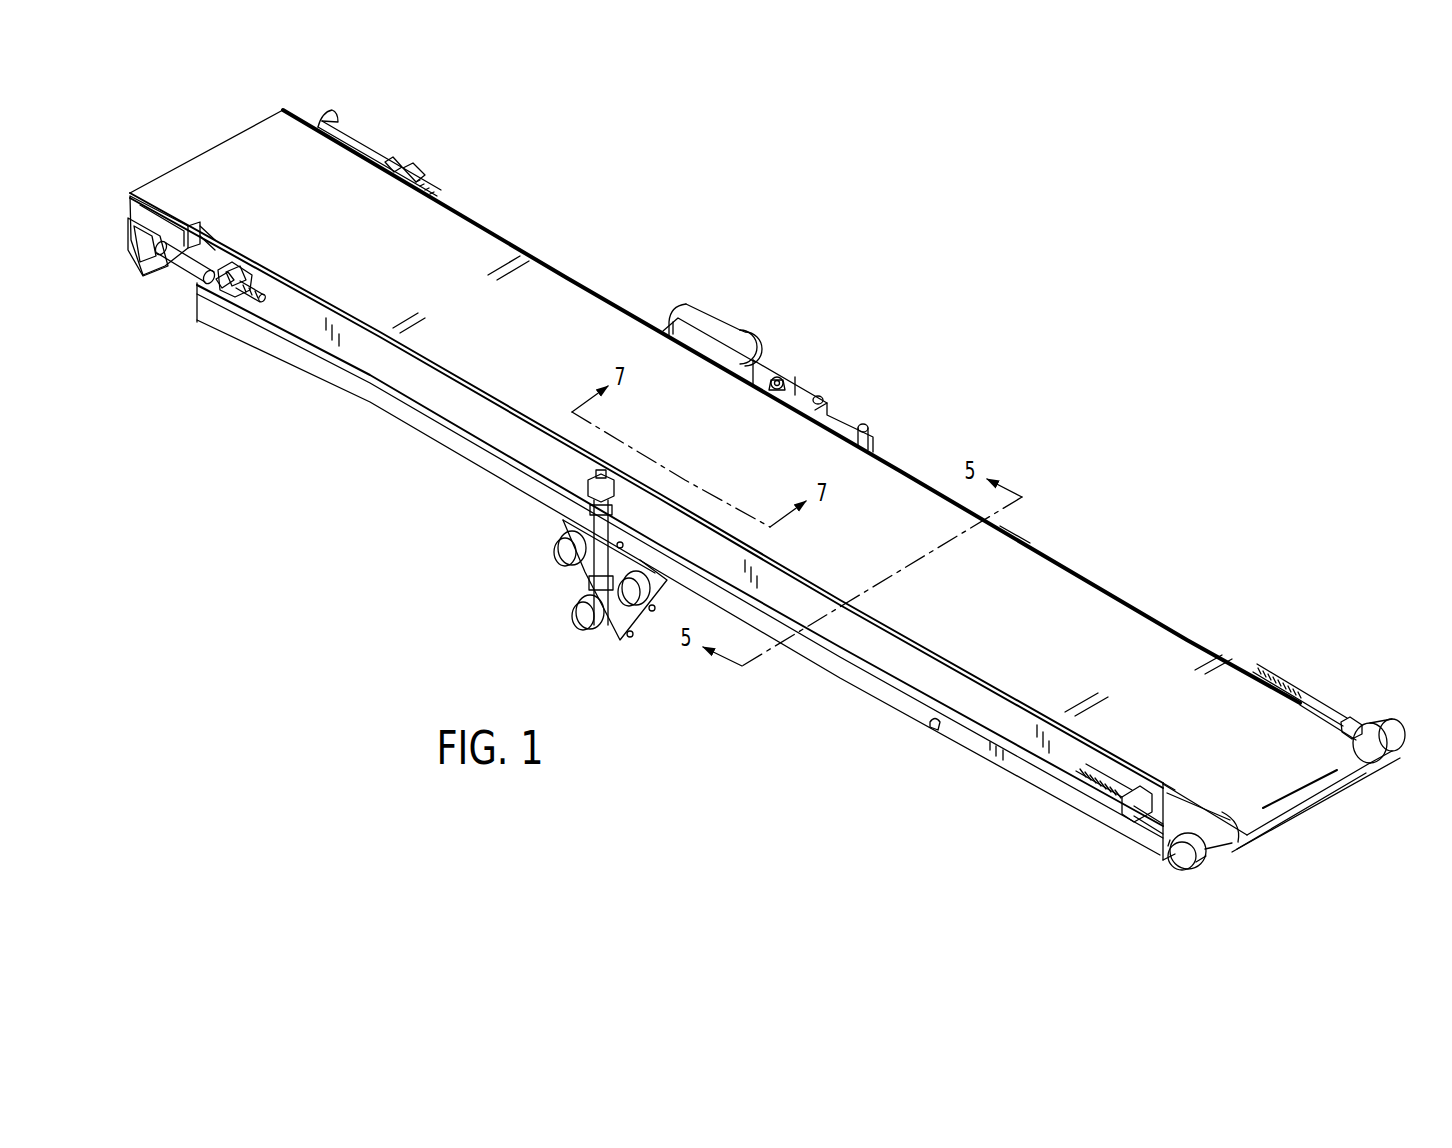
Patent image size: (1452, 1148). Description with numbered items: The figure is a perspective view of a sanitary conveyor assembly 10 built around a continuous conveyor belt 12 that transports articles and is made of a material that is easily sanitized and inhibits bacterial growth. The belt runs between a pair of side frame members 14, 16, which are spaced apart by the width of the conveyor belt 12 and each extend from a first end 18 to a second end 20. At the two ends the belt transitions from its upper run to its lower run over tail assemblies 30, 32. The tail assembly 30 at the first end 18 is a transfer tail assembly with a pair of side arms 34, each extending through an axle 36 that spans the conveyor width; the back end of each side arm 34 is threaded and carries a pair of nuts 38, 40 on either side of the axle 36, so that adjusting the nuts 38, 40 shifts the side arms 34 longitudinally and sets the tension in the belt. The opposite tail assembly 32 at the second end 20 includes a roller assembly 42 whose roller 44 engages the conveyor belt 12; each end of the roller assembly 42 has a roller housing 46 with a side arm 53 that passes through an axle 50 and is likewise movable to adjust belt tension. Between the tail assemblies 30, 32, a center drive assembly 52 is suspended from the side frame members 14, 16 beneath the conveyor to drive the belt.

The sanitary conveyor assembly 10 is at (754, 314).
The continuous conveyor belt 12 is at (1064, 599).
The side frame member 14 is at (933, 678).
The side frame member 16 is at (1033, 540).
The first end 18 is at (204, 295).
The second end 20 is at (1157, 858).
The tail assembly 30 is at (145, 283).
The tail assembly 32 is at (1175, 872).
The side arm 34 is at (358, 148).
The axle 36 is at (226, 305).
The nut 38 is at (246, 274).
The nut 40 is at (226, 262).
The roller assembly 42 is at (1405, 727).
The roller 44 is at (1225, 826).
The roller housing 46 is at (1208, 857).
The axle 50 is at (1112, 828).
The center drive assembly 52 is at (791, 366).
The side arm 53 is at (1142, 843).